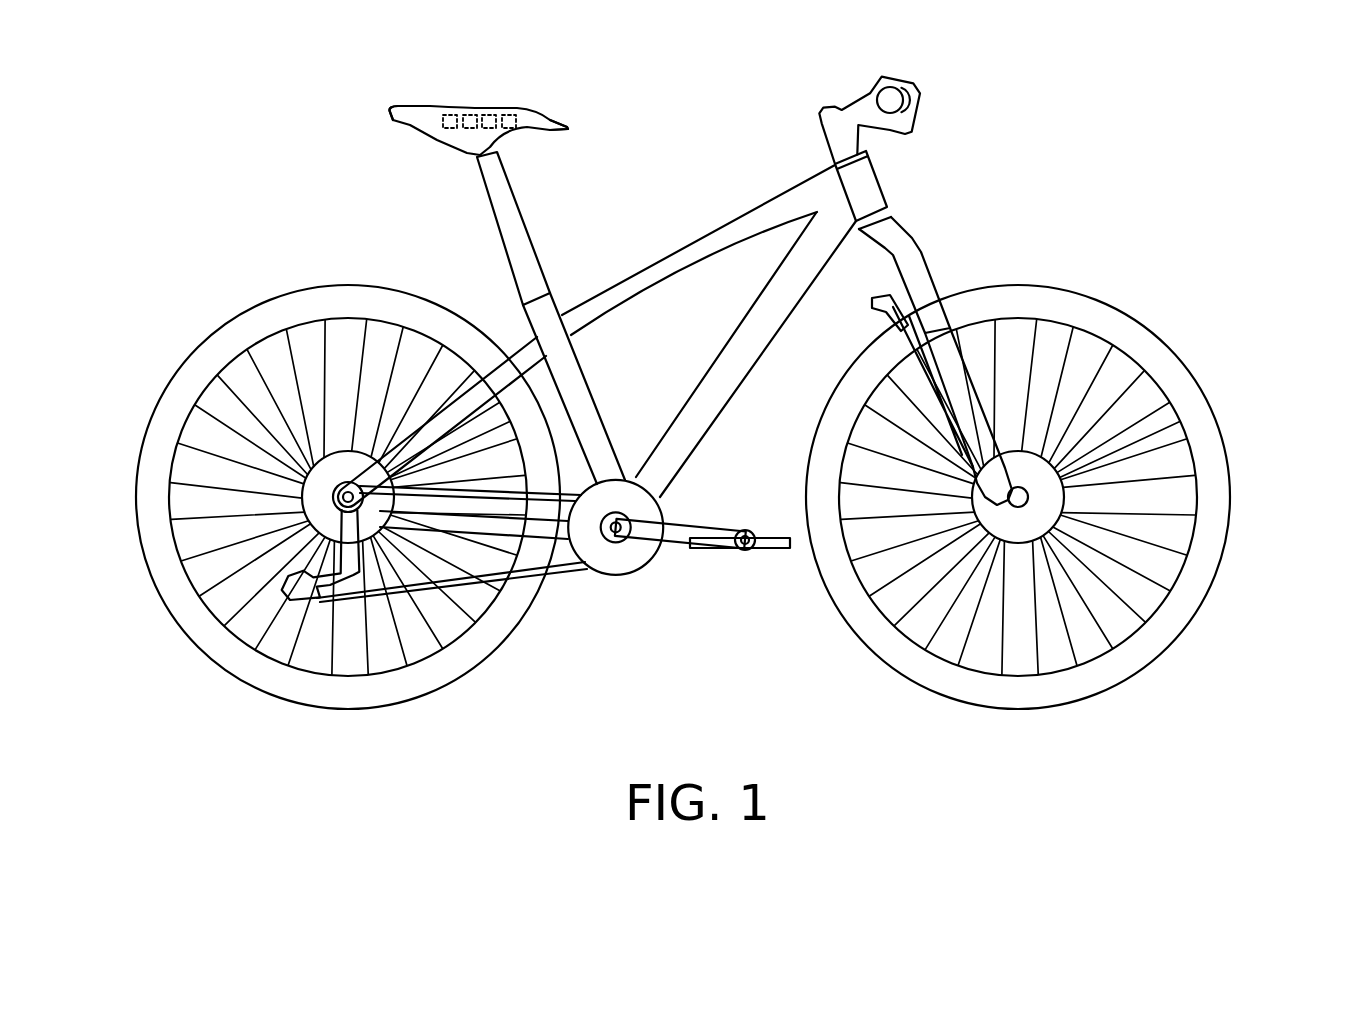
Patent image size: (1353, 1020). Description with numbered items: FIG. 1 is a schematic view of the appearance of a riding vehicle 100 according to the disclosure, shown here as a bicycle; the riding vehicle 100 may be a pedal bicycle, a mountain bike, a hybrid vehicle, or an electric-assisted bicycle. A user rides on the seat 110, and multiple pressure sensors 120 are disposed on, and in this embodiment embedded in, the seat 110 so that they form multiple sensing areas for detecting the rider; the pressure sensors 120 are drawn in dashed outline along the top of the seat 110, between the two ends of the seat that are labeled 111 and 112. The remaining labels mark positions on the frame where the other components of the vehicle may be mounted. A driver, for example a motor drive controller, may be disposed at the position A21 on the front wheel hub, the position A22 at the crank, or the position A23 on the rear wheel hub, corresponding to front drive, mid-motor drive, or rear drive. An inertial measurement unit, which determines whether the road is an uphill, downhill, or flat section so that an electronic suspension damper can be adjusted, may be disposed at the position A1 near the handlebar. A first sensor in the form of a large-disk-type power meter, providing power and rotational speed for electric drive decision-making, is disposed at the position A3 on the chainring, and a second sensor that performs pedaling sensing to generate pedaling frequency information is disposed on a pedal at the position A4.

The riding vehicle 100 is at (1330, 749).
The seat 110 is at (409, 110).
The rear portion of saddle 111 is at (587, 131).
The nose portion of saddle 112 is at (374, 123).
The pressure sensors 120 is at (488, 113).
The position A1 is at (920, 114).
The position A21 is at (1055, 496).
The position A22 is at (655, 571).
The position A23 is at (318, 502).
The position A3 is at (591, 561).
The position A4 is at (772, 554).